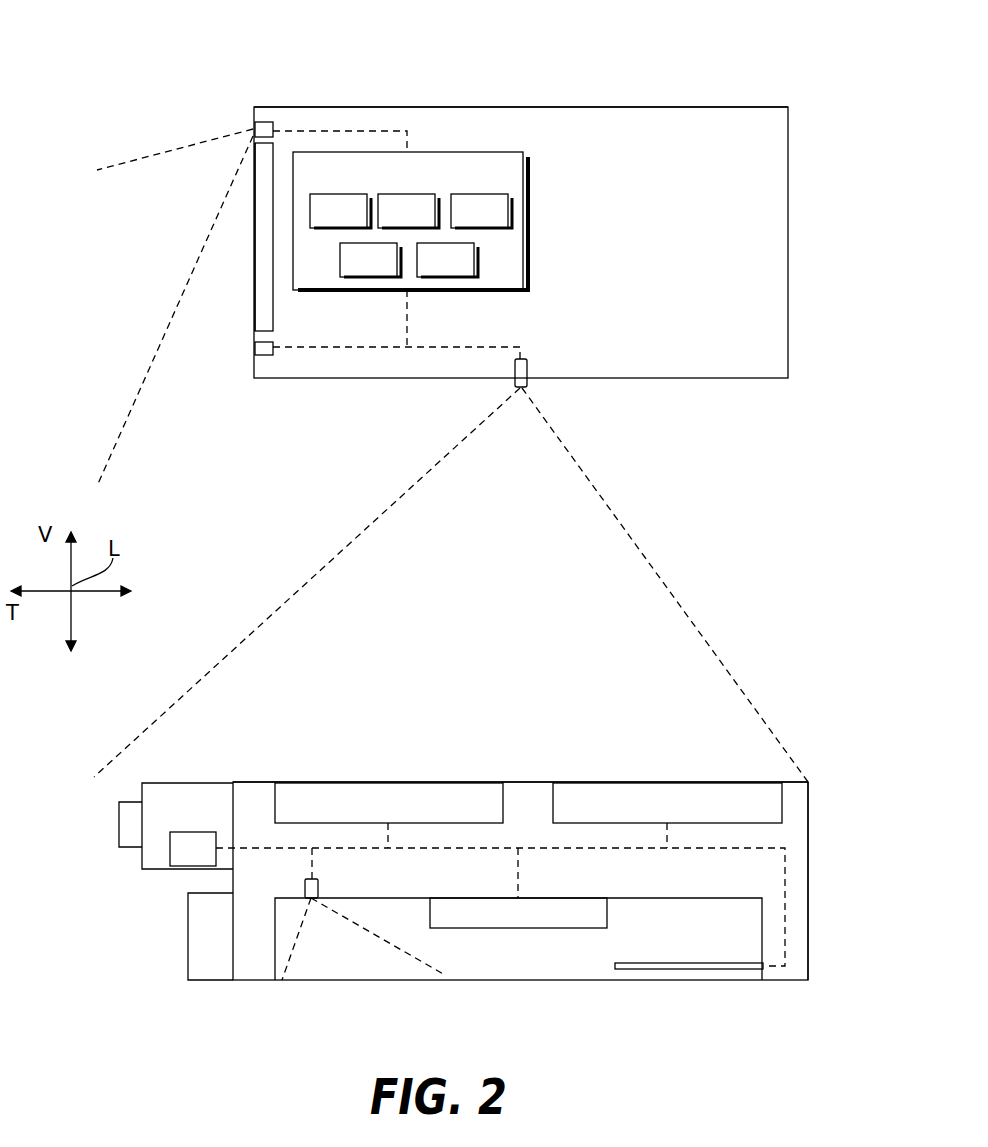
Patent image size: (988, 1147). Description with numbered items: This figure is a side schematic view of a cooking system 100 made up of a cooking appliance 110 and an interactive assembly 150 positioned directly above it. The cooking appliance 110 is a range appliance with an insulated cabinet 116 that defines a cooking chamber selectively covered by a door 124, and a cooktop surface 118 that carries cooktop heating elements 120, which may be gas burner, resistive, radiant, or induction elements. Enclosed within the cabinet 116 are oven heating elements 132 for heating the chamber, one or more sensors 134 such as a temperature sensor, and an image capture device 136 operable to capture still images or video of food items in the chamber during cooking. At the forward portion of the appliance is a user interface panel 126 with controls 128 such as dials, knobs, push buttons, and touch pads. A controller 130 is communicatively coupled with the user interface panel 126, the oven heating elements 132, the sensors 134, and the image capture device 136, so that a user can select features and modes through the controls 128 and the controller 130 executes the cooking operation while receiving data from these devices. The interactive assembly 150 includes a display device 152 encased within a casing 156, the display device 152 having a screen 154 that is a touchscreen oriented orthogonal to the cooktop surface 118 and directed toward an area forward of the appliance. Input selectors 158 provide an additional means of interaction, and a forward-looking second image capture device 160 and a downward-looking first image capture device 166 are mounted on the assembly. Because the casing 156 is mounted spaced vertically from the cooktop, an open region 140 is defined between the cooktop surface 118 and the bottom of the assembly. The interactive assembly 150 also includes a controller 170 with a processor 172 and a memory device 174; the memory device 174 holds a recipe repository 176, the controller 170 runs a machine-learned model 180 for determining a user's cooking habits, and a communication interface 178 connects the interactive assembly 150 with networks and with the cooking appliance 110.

The cooking system 100 is at (106, 74).
The cooking appliance 110 is at (806, 742).
The cabinet 116 is at (838, 915).
The cooktop surface 118 is at (540, 774).
The cooktop heating elements 120 is at (362, 805).
The door 124 is at (205, 945).
The user interface panel 126 is at (142, 860).
The controls 128 is at (118, 825).
The controller 130 is at (193, 830).
The oven heating elements 132 is at (541, 910).
The sensors 134 is at (688, 970).
The image capture device 136 is at (318, 890).
The open region 140 is at (451, 455).
The interactive assembly 150 is at (638, 80).
The display device 152 is at (259, 308).
The screen 154 is at (248, 230).
The casing 156 is at (465, 107).
The input selectors 158 is at (265, 357).
The second image capture device 160 is at (263, 121).
The first image capture device 166 is at (529, 372).
The controller 170 is at (410, 221).
The processor 172 is at (340, 211).
The memory device 174 is at (408, 211).
The recipe repository 176 is at (481, 211).
The communication interface 178 is at (370, 260).
The machine-learned model 180 is at (447, 260).